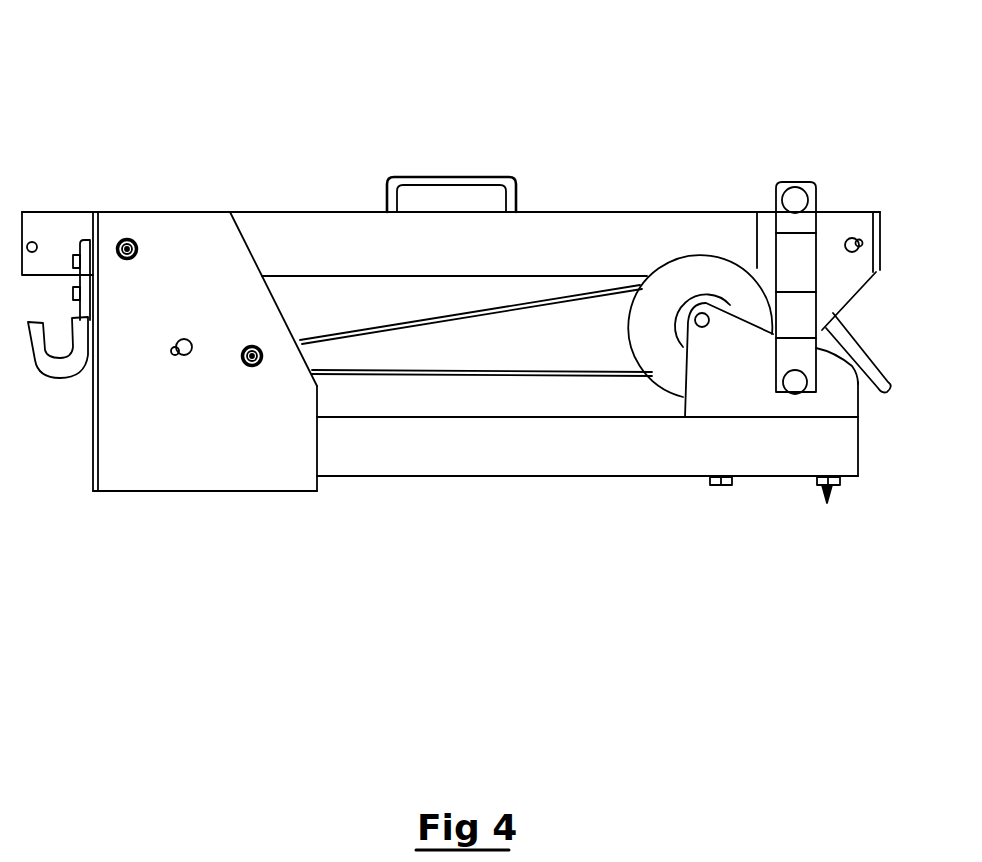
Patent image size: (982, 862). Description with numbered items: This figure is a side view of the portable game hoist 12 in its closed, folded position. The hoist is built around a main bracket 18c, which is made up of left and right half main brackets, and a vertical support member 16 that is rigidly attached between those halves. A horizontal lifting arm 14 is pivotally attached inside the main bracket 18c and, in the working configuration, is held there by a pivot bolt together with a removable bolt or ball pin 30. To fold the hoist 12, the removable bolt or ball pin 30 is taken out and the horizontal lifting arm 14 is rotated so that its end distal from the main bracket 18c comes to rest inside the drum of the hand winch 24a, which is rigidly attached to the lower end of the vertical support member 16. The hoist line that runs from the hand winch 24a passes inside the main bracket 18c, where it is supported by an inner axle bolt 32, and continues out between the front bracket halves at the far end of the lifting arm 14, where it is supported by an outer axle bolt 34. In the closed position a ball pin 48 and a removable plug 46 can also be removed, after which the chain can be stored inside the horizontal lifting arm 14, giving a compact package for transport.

The portable game hoist 12 is at (343, 187).
The horizontal lifting arm 14 is at (675, 221).
The vertical support member 16 is at (517, 460).
The main bracket 18c is at (242, 447).
The hand winch 24a is at (720, 388).
The removable bolt or ball pin 30 is at (182, 358).
The inner axle bolt 32 is at (242, 348).
The outer axle bolt 34 is at (820, 323).
The removable plug 46 is at (877, 210).
The ball pin 48 is at (847, 233).